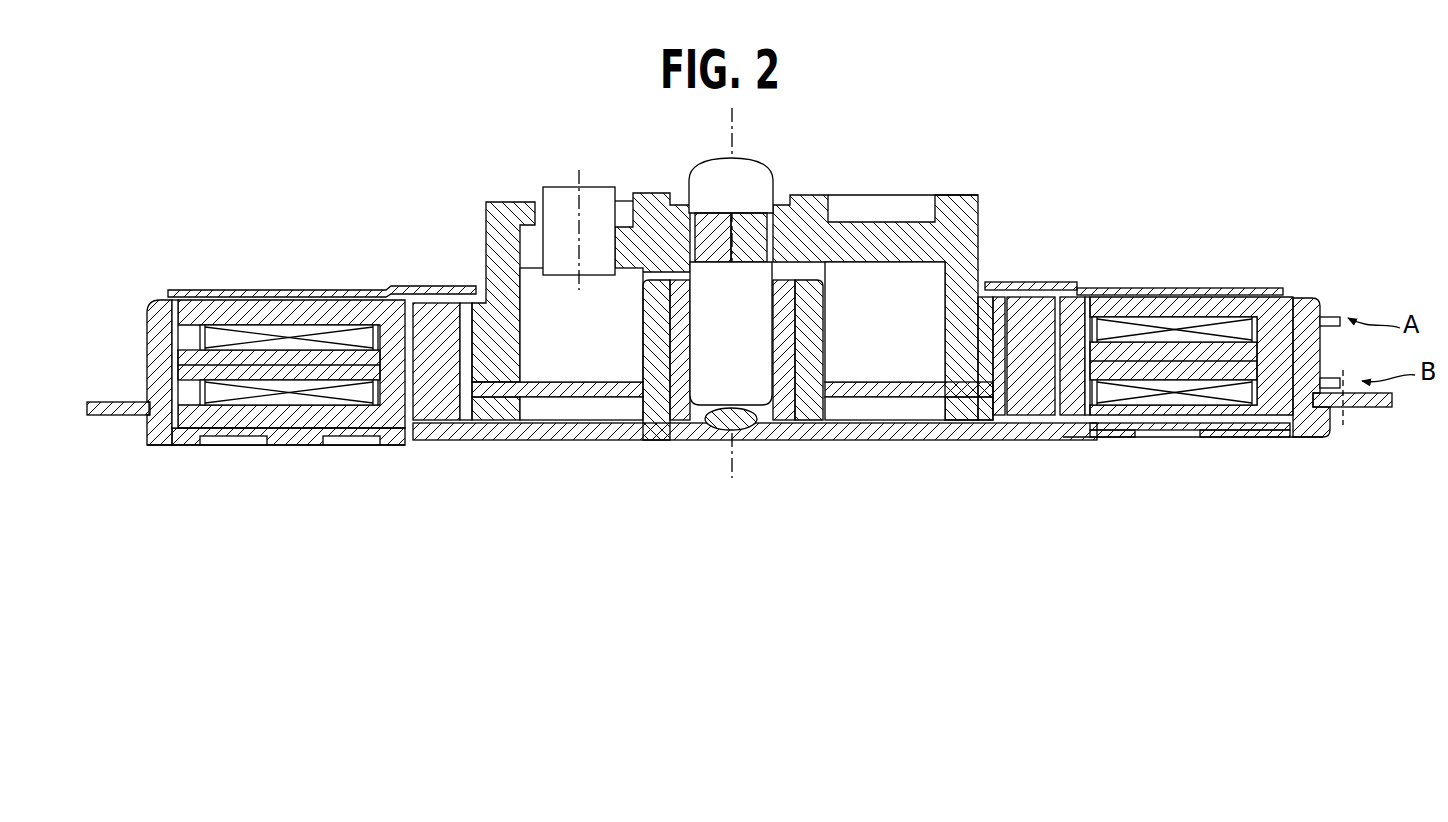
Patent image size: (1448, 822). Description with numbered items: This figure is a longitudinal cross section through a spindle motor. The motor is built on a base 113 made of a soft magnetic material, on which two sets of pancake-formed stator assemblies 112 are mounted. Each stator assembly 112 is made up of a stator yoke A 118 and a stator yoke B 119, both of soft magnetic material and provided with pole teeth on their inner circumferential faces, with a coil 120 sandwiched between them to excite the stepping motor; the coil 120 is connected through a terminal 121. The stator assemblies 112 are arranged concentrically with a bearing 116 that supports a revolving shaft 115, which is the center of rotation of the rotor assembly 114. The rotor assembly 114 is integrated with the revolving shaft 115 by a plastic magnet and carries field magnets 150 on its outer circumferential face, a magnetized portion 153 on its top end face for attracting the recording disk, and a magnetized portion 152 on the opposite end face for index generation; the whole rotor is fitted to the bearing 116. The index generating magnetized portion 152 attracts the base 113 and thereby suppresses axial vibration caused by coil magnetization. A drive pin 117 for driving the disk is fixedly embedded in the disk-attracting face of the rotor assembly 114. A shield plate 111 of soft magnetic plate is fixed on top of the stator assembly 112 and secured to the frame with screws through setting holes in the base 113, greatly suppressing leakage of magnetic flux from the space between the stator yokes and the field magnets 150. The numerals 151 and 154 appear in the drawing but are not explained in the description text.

The shield plate 111 is at (175, 297).
The stator assembly 112 is at (322, 307).
The base 113 is at (100, 402).
The rotor assembly 114 is at (820, 192).
The revolving shaft 115 is at (748, 172).
The bearing 116 is at (656, 443).
The drive pin 117 is at (587, 187).
The stator yoke A 118 is at (388, 243).
The stator yoke B 119 is at (298, 352).
The coil 120 is at (372, 300).
The terminal 121 is at (1333, 312).
The field magnet 150 is at (413, 440).
The spacer 151 is at (467, 440).
The magnetized portion for index generation 152 is at (955, 440).
The magnetized portion for attracting the disk 153 is at (978, 193).
The cavity 154 is at (585, 382).